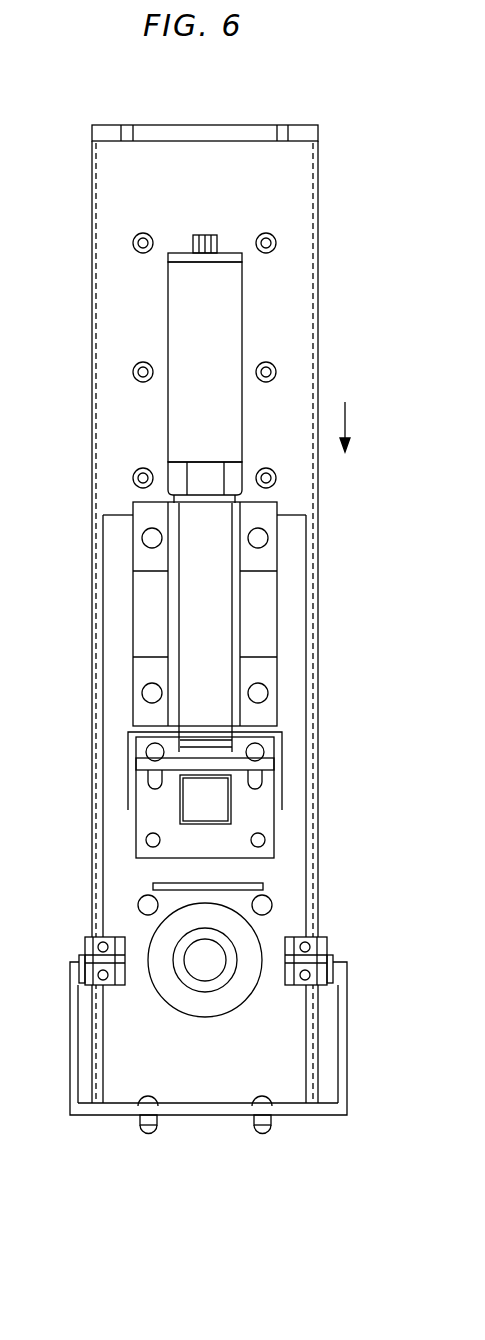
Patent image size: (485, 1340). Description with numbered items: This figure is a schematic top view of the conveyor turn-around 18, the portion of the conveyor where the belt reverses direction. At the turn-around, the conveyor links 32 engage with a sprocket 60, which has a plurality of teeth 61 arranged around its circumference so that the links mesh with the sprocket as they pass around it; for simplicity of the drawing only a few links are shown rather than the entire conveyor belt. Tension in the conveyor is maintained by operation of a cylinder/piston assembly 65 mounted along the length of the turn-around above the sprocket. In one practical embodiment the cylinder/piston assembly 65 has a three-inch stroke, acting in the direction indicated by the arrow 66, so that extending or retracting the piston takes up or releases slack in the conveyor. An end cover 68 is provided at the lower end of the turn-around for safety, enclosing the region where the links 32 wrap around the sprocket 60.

The conveyor turn-around 18 is at (89, 75).
The cylinder/piston assembly 65 is at (225, 322).
The arrow 66 is at (348, 418).
The sprocket 60 is at (101, 911).
The teeth 61 is at (309, 906).
The conveyor links 32 is at (330, 943).
The end cover 68 is at (105, 1117).